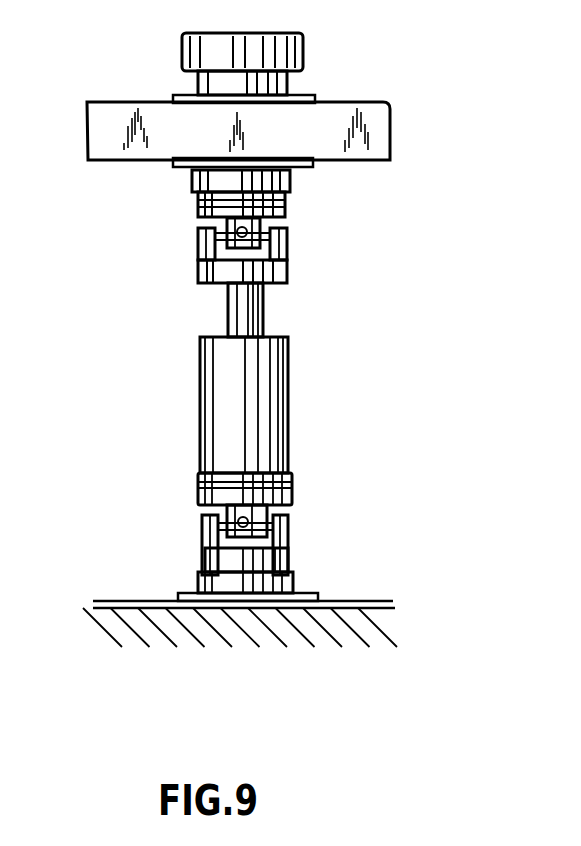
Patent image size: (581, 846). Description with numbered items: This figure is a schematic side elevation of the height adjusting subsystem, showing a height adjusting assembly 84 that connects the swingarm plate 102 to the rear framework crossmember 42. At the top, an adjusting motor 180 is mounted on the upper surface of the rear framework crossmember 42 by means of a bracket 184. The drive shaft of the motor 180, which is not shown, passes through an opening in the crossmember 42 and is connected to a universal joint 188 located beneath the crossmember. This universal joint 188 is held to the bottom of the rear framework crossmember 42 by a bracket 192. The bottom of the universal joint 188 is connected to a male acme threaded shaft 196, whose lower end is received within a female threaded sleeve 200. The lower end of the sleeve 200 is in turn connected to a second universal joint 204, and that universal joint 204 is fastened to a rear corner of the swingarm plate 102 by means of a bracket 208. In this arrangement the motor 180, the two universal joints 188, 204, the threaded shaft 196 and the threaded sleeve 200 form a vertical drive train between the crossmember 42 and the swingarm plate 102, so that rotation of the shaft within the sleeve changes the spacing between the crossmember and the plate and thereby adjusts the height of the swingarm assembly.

The height adjusting assembly 84 is at (126, 393).
The adjusting motor 180 is at (303, 48).
The bracket 184 is at (285, 84).
The rear framework crossmember 42 is at (377, 137).
The bracket 192 is at (288, 178).
The universal joint 188 is at (288, 260).
The male acme threaded shaft 196 is at (263, 313).
The female threaded sleeve 200 is at (288, 427).
The universal joint 204 is at (288, 535).
The bracket 208 is at (295, 576).
The swingarm plate 102 is at (390, 602).